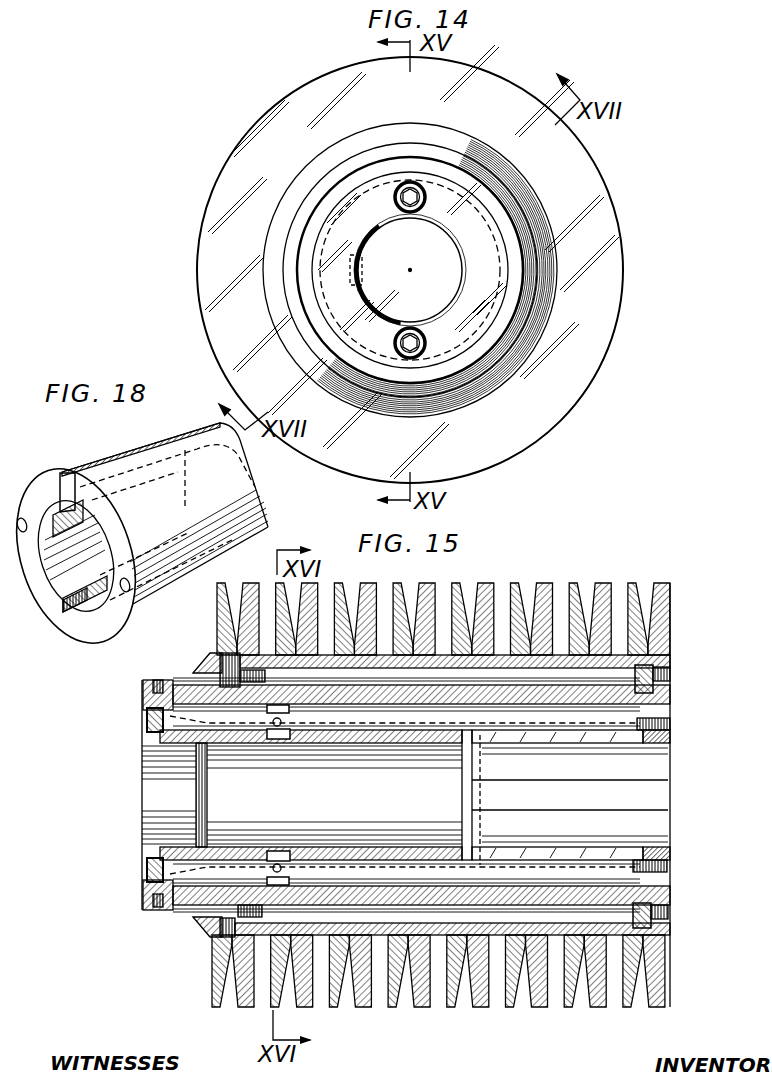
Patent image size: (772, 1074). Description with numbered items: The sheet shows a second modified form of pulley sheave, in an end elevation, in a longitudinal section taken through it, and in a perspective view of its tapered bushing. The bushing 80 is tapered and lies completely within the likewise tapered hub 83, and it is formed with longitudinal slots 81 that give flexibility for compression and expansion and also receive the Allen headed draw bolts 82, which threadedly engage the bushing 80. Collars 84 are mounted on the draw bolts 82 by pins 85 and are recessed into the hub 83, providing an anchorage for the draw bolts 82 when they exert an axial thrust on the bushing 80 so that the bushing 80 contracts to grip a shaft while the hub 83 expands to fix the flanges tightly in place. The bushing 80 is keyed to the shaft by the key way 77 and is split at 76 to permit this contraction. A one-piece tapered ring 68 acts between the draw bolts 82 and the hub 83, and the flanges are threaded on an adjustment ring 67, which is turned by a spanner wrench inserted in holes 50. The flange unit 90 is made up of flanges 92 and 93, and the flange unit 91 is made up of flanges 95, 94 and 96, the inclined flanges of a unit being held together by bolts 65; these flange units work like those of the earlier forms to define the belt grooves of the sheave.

In FIG. 15, the holes 50 is at (158, 907).
In FIG. 15, the bolts 65 is at (652, 912).
In FIG. 14, the adjustment ring 67 is at (300, 288).
In FIG. 15, the adjustment ring 67 is at (147, 690).
In FIG. 14, the tapered ring 68 is at (483, 232).
In FIG. 15, the tapered ring 68 is at (152, 848).
In FIG. 14, the split 76 is at (462, 275).
In FIG. 18, the split 76 is at (118, 462).
In FIG. 14, the key way 77 is at (368, 265).
In FIG. 18, the key way 77 is at (83, 605).
In FIG. 15, the key way 77 is at (655, 810).
In FIG. 14, the bushing 80 is at (378, 306).
In FIG. 18, the bushing 80 is at (58, 618).
In FIG. 15, the bushing 80 is at (668, 740).
In FIG. 14, the longitudinal slots 81 is at (412, 322).
In FIG. 18, the longitudinal slots 81 is at (262, 522).
In FIG. 15, the longitudinal slots 81 is at (550, 850).
In FIG. 14, the draw bolts 82 is at (410, 418).
In FIG. 15, the draw bolts 82 is at (147, 866).
In FIG. 14, the hub 83 is at (330, 228).
In FIG. 15, the hub 83 is at (382, 848).
In FIG. 14, the collars 84 is at (426, 343).
In FIG. 15, the collars 84 is at (273, 852).
In FIG. 15, the pins 85 is at (286, 852).
In FIG. 14, the flange unit 90 is at (190, 213).
In FIG. 15, the flange unit 90 is at (190, 930).
In FIG. 15, the flange unit 91 is at (680, 600).
In FIG. 14, the flange 92 is at (612, 266).
In FIG. 15, the flange 92 is at (213, 1008).
In FIG. 15, the flange 93 is at (627, 1010).
In FIG. 15, the flange 94 is at (553, 585).
In FIG. 15, the flange 95 is at (262, 583).
In FIG. 15, the flange 96 is at (668, 583).